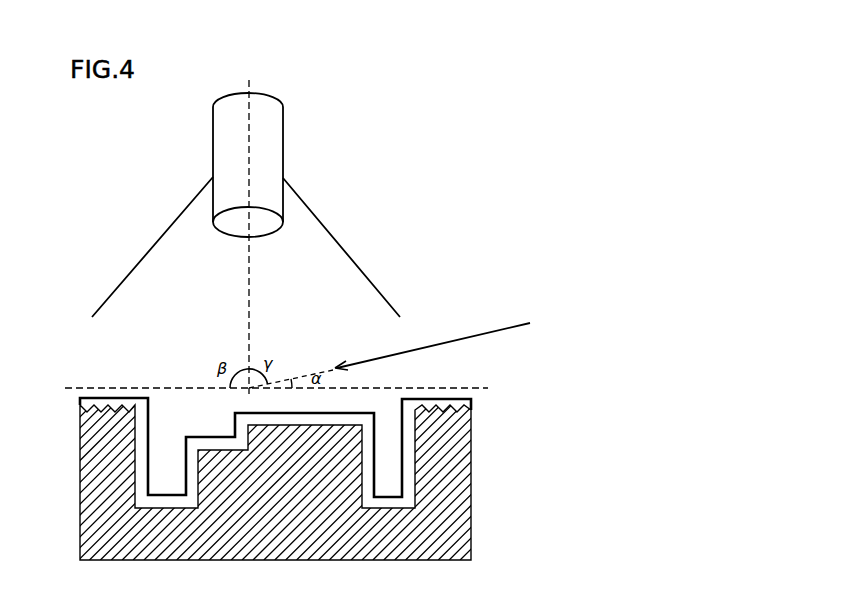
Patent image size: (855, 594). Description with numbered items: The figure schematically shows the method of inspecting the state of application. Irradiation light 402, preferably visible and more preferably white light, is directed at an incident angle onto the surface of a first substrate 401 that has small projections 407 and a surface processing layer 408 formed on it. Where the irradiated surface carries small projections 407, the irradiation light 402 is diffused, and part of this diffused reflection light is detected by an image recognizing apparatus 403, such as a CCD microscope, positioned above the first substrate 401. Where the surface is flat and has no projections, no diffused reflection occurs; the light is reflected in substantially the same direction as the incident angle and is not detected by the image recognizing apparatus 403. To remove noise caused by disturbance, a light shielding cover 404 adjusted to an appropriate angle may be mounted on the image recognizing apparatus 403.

The first substrate 401 is at (448, 527).
The irradiation light 402 is at (500, 330).
The image recognizing apparatus 403 is at (267, 134).
The light shielding cover 404 is at (345, 248).
The small projections 407 is at (455, 405).
The surface processing layer 408 is at (409, 473).